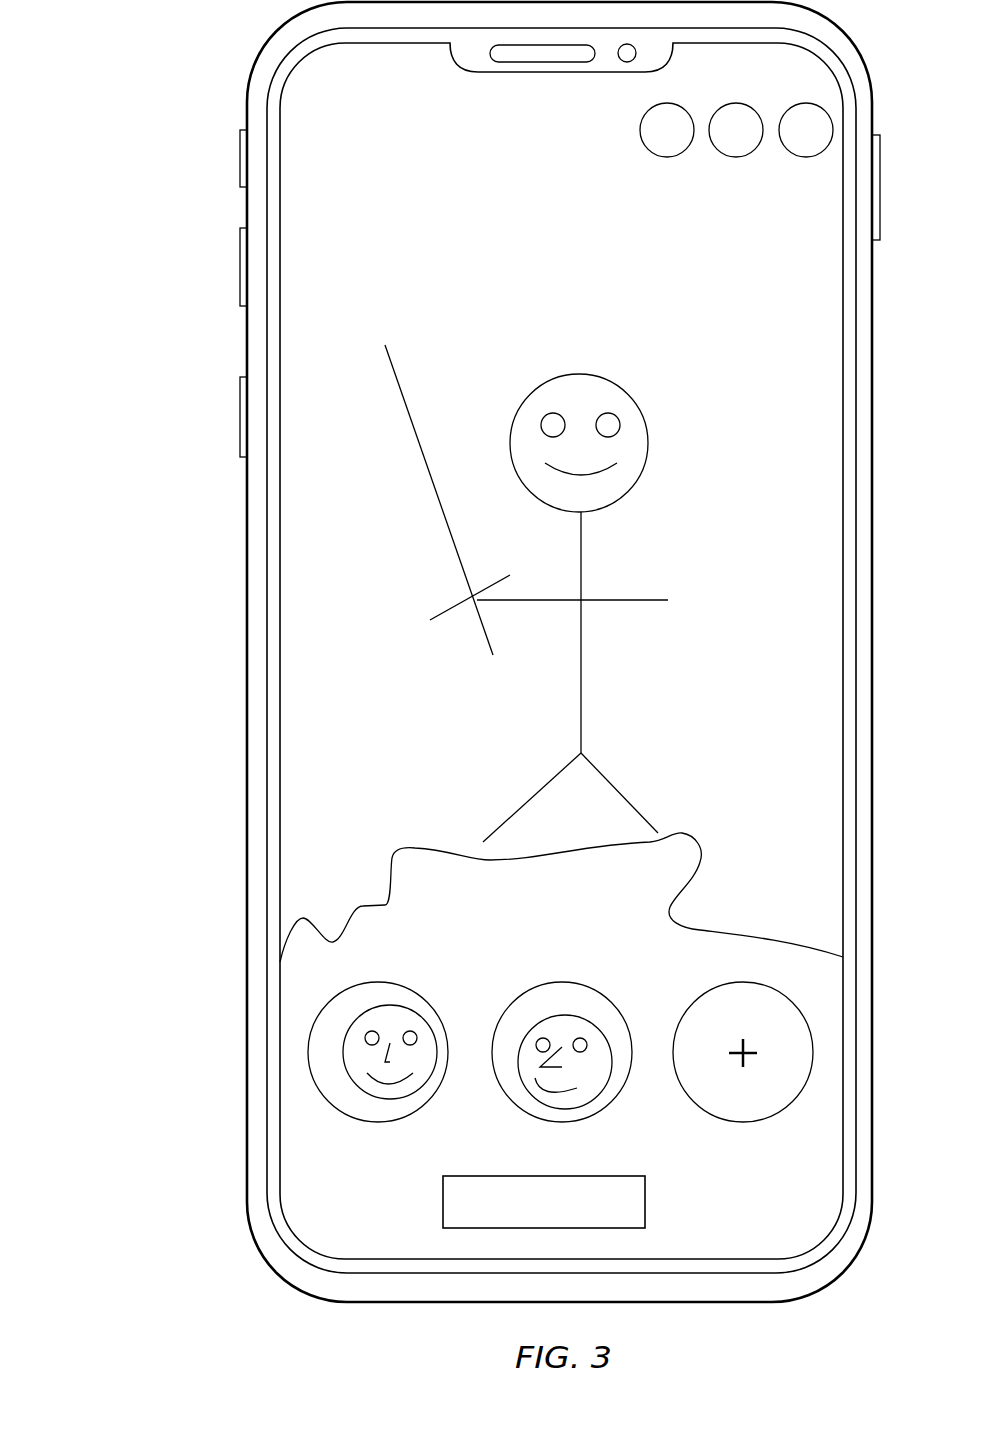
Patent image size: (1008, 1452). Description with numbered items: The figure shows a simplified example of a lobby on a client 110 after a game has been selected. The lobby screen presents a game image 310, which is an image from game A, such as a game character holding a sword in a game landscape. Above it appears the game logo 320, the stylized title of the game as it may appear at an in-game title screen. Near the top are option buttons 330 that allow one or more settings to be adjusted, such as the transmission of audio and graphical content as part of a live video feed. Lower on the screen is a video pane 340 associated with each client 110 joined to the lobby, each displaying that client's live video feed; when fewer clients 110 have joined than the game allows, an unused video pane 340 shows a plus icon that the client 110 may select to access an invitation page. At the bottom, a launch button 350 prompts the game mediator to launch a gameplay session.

The client 110 is at (247, 486).
The game image 310 is at (550, 683).
The game logo 320 is at (522, 264).
The option buttons 330 is at (645, 117).
The video pane 340 is at (318, 1063).
The launch button 350 is at (453, 1218).